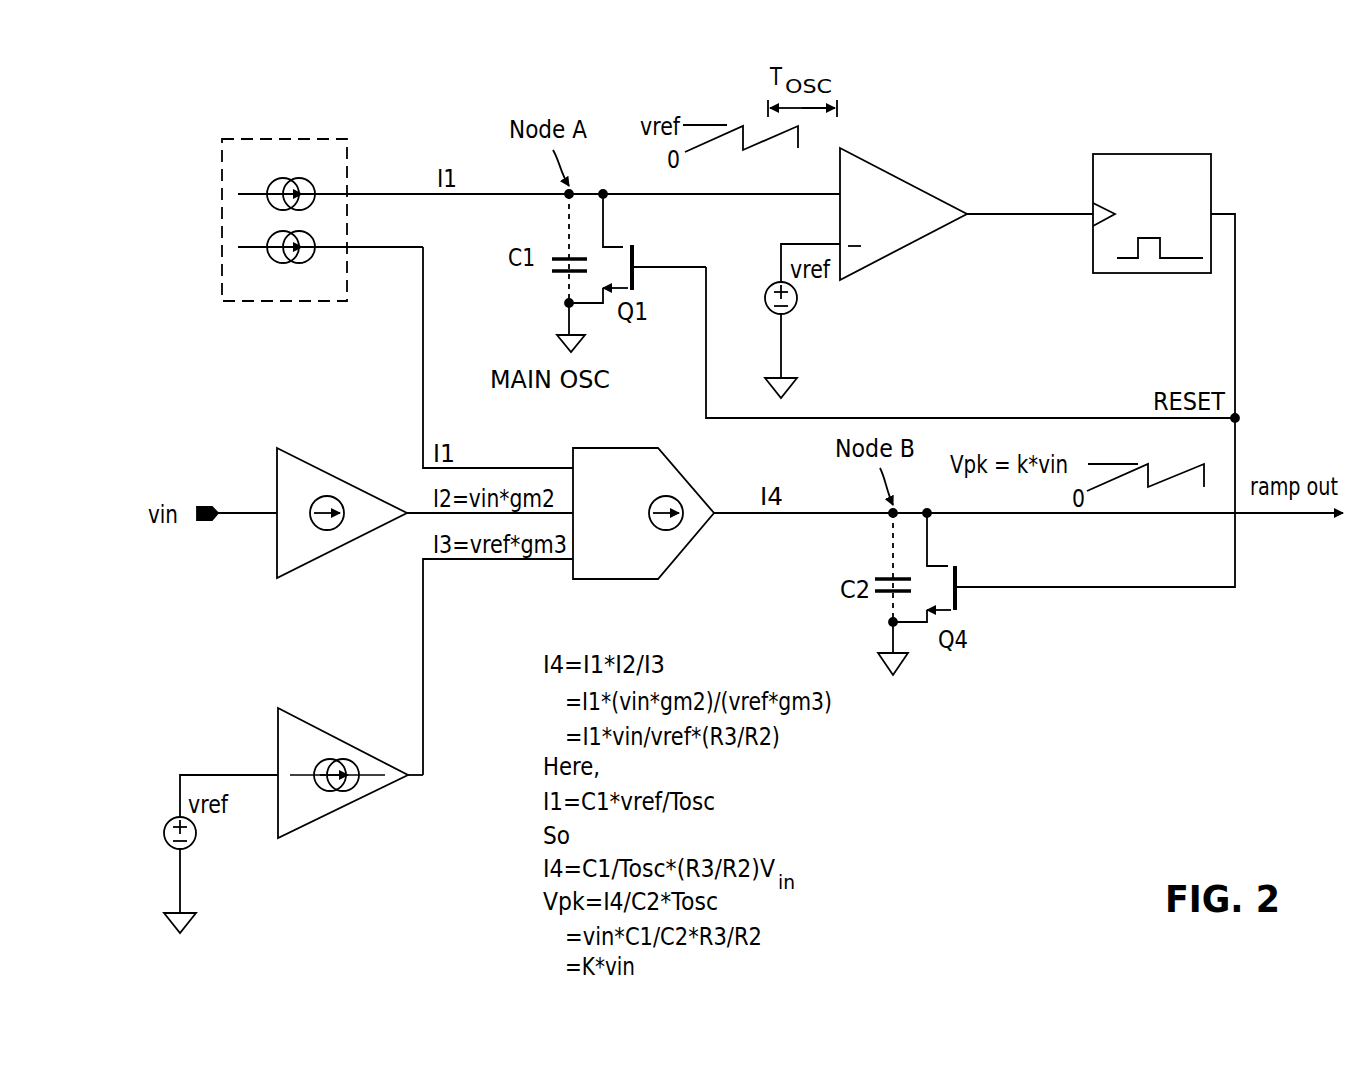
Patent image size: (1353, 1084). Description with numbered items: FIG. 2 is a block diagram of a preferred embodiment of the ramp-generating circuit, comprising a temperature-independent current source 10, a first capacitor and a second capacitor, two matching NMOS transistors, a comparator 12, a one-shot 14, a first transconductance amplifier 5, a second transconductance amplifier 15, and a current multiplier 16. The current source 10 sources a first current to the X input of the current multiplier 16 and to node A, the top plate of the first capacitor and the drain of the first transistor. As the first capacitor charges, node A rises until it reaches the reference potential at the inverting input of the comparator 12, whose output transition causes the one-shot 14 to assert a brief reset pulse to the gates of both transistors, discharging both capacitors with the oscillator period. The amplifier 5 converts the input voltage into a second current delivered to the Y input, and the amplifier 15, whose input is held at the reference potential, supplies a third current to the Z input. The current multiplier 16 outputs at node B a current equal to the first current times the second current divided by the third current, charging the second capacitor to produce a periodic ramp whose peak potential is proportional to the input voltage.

The temperature-independent current source 10 is at (327, 302).
The transconductance amplifier 5 is at (338, 478).
The comparator 12 is at (902, 178).
The one-shot 14 is at (1117, 154).
The transconductance amplifier 15 is at (338, 740).
The current multiplier 16 is at (640, 448).